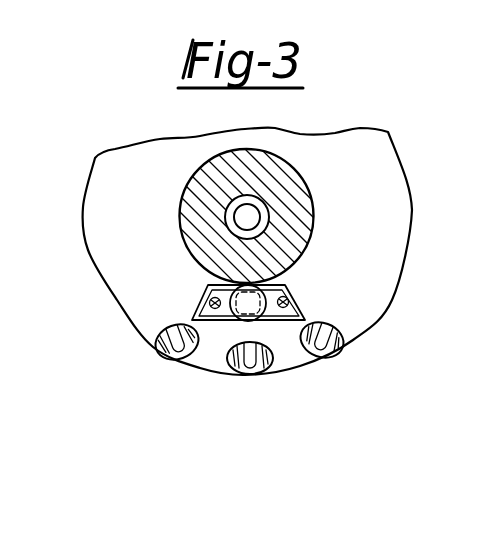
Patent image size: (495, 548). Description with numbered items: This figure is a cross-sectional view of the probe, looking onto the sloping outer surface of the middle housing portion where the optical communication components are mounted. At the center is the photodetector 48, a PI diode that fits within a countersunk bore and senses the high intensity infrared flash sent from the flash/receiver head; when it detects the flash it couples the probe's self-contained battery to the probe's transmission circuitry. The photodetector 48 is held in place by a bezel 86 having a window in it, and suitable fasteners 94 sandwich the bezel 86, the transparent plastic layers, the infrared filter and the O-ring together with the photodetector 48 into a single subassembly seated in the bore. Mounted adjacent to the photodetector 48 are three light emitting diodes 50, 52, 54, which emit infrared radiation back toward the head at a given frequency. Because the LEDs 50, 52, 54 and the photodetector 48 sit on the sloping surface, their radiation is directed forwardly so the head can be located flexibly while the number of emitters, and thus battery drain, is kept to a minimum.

The photodetector 48 is at (272, 289).
The light emitting diode 50 is at (172, 352).
The light emitting diode 52 is at (243, 372).
The light emitting diode 54 is at (324, 352).
The bezel 86 is at (292, 306).
The fasteners 94 is at (209, 296).